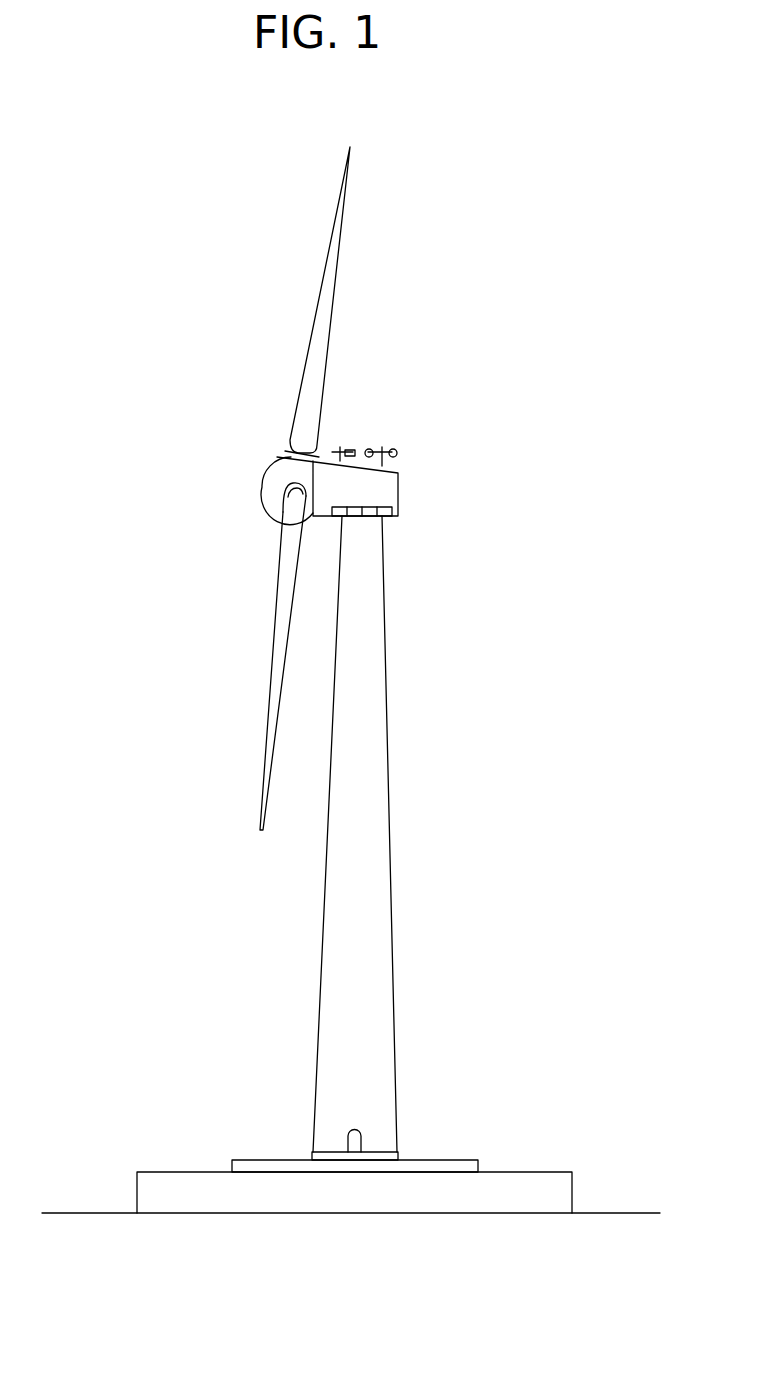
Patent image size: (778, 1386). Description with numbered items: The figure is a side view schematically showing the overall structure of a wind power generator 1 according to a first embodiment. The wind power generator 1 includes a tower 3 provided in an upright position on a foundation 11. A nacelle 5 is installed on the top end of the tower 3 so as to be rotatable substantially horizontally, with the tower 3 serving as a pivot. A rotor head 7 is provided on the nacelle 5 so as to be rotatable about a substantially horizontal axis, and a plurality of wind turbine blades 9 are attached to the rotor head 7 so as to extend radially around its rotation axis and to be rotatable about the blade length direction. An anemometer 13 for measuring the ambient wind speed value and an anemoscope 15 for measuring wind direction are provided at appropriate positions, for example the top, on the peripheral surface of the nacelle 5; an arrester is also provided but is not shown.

The wind power generator 1 is at (487, 410).
The tower 3 is at (387, 696).
The nacelle 5 is at (398, 490).
The rotor head 7 is at (262, 486).
The wind turbine blades 9 is at (339, 247).
The foundation 11 is at (555, 1178).
The anemometer 13 is at (396, 452).
The anemoscope 15 is at (350, 449).